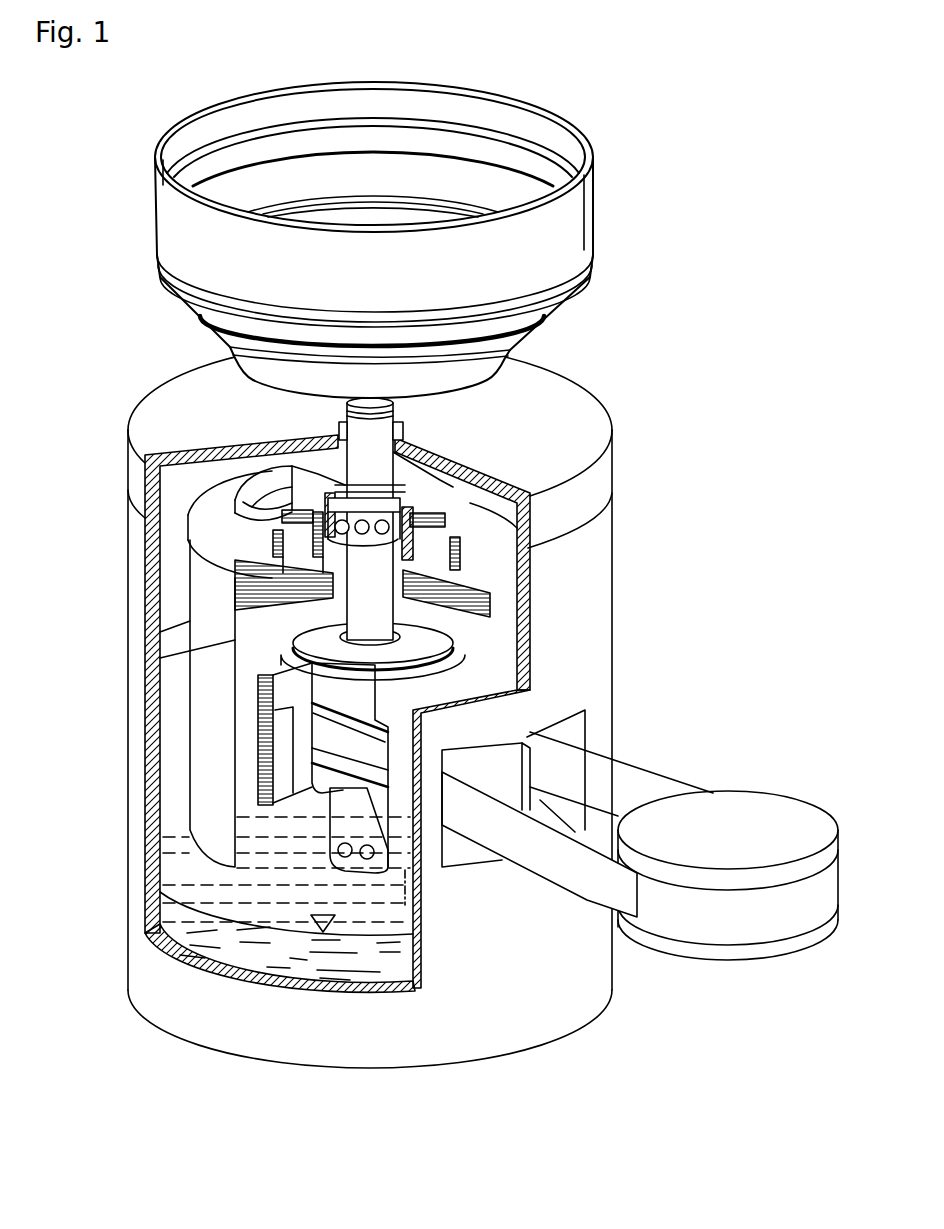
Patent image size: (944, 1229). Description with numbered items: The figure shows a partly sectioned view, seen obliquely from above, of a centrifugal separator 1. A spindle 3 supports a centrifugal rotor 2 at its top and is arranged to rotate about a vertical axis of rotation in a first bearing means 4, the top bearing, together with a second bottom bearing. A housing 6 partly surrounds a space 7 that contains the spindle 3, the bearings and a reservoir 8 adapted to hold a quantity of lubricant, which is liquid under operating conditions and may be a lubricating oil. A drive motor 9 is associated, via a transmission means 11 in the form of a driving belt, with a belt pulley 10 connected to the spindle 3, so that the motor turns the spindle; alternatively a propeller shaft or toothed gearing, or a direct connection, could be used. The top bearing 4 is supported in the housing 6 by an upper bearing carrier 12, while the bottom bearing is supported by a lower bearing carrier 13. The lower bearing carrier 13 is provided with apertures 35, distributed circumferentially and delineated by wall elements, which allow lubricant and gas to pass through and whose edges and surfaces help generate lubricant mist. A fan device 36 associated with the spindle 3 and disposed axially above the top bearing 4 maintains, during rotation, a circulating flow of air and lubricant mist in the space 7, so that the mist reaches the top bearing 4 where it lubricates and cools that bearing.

The centrifugal separator 1 is at (124, 320).
The centrifugal rotor 2 is at (182, 235).
The spindle 3 is at (337, 430).
The first bearing means 4 is at (260, 573).
The housing 6 is at (143, 667).
The space 7 is at (183, 513).
The reservoir 8 is at (172, 918).
The drive motor 9 is at (640, 846).
The belt pulley 10 is at (345, 692).
The transmission means 11 is at (337, 752).
The upper bearing carrier 12 is at (280, 498).
The lower bearing carrier 13 is at (258, 805).
The apertures 35 is at (353, 813).
The fan device 36 is at (315, 472).